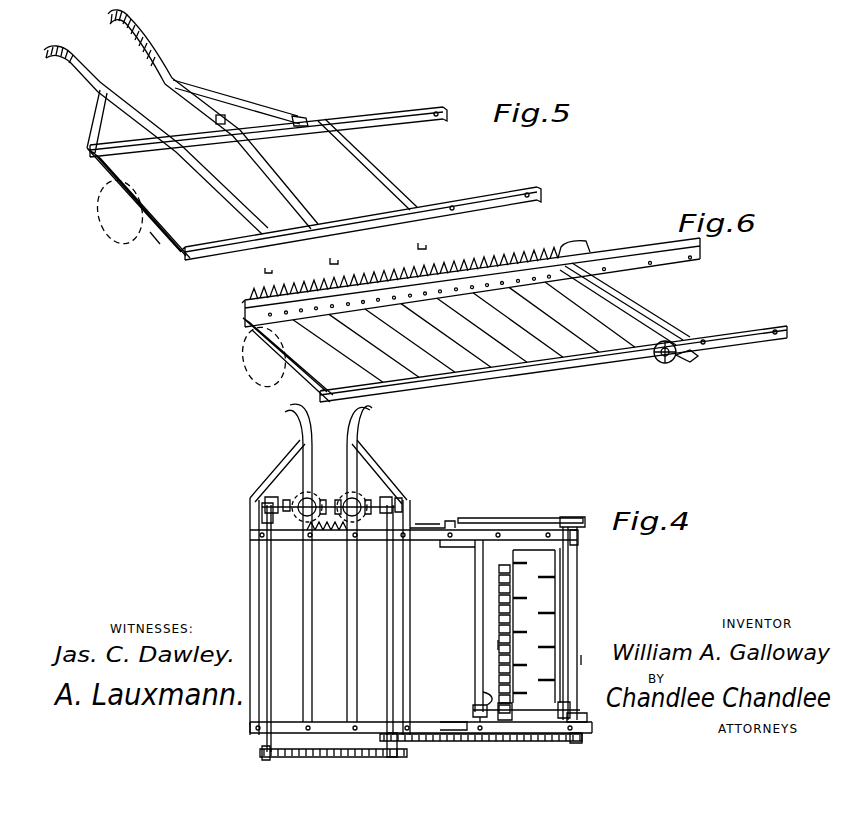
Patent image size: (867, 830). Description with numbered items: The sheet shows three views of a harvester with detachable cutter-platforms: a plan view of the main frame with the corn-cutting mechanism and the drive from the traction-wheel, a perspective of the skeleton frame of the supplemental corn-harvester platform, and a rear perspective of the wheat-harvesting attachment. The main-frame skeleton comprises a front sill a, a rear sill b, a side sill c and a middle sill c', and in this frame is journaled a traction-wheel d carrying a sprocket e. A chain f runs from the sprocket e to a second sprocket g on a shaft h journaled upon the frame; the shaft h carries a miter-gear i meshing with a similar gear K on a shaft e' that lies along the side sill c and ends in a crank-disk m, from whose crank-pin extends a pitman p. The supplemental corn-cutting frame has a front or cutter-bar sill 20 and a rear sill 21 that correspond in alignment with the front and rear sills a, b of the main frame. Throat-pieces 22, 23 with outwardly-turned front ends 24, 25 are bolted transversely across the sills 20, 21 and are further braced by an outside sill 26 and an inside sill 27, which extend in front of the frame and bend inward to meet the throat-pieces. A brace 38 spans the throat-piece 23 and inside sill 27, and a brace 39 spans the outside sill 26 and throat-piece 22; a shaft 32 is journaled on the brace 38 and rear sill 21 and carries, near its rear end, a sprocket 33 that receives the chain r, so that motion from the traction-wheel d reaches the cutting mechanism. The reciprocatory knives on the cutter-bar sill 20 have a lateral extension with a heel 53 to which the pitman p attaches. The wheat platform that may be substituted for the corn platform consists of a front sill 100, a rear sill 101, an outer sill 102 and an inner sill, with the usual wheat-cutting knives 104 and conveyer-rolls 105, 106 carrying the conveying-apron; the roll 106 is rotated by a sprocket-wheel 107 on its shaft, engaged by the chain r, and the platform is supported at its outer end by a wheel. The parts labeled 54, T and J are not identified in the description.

In FIG. 5, the front or cutter-bar sill 20 is at (385, 110).
In FIG. 4, the front or cutter-bar sill 20 is at (380, 542).
In FIG. 5, the rear sill 21 is at (458, 202).
In FIG. 4, the rear sill 21 is at (372, 722).
In FIG. 5, the throat-piece 22 is at (155, 124).
In FIG. 4, the throat-piece 22 is at (312, 443).
In FIG. 5, the throat-piece 23 is at (168, 78).
In FIG. 4, the throat-piece 23 is at (357, 437).
In FIG. 5, the outwardly-turned front end 24 is at (66, 50).
In FIG. 4, the outwardly-turned front end 24 is at (283, 415).
In FIG. 5, the outwardly-turned front end 25 is at (118, 18).
In FIG. 4, the outwardly-turned front end 25 is at (372, 408).
In FIG. 5, the outside sill 26 is at (156, 246).
In FIG. 4, the outside sill 26 is at (250, 562).
In FIG. 5, the inside sill 27 is at (292, 112).
In FIG. 4, the inside sill 27 is at (402, 502).
In FIG. 4, the shaft 32 is at (393, 600).
In FIG. 4, the sprocket 33 is at (380, 739).
In FIG. 5, the brace 38 is at (227, 122).
In FIG. 4, the brace 38 is at (433, 614).
In FIG. 5, the brace 39 is at (138, 174).
In FIG. 4, the brace 39 is at (262, 512).
In FIG. 4, the heel 53 is at (432, 517).
In FIG. 4, the toothed rack 54 is at (410, 753).
In FIG. 6, the front sill 100 is at (604, 246).
In FIG. 6, the rear sill 101 is at (732, 332).
In FIG. 6, the outer sill 102 is at (302, 384).
In FIG. 6, the wheat-cutting knives 104 is at (476, 268).
In FIG. 6, the conveyer-roll 105 is at (298, 356).
In FIG. 6, the conveyer-roll 106 is at (608, 304).
In FIG. 6, the sprocket-wheel 107 is at (658, 362).
In FIG. 6, the bracket T is at (690, 362).
In FIG. 4, the front sill a is at (487, 536).
In FIG. 4, the pitman p is at (525, 518).
In FIG. 4, the corner bracket J is at (571, 517).
In FIG. 4, the crank-disk m is at (578, 538).
In FIG. 4, the side sill c is at (585, 623).
In FIG. 4, the middle sill c' is at (470, 626).
In FIG. 4, the sprocket e is at (497, 639).
In FIG. 4, the traction-wheel d is at (536, 625).
In FIG. 4, the shaft e' is at (590, 659).
In FIG. 4, the chain f is at (499, 645).
In FIG. 4, the shaft h is at (478, 693).
In FIG. 4, the miter-gear i is at (570, 708).
In FIG. 4, the miter-gear K is at (587, 717).
In FIG. 4, the second sprocket g is at (583, 739).
In FIG. 4, the rear sill b is at (555, 736).
In FIG. 4, the chain r is at (512, 742).